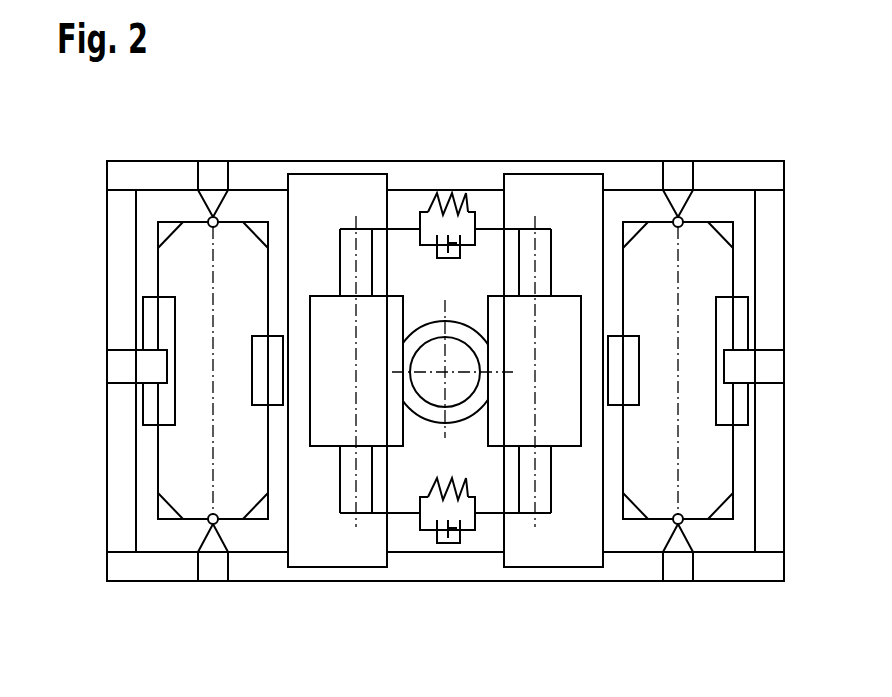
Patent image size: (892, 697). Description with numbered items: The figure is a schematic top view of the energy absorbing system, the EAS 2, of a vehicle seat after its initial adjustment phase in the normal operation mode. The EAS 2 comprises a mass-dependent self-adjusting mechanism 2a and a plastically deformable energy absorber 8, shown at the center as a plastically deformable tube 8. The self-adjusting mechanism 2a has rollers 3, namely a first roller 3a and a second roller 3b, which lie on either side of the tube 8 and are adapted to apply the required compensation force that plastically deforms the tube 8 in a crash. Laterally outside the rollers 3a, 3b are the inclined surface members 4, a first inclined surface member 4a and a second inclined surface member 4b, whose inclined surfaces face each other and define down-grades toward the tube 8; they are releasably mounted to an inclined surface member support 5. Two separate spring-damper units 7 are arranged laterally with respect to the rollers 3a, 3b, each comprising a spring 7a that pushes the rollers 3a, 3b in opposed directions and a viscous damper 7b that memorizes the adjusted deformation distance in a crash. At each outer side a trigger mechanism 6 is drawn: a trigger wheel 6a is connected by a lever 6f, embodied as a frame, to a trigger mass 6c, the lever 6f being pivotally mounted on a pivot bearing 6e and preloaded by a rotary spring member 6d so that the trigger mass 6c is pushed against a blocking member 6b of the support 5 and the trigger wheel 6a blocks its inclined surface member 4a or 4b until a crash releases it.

The EAS 2 is at (543, 149).
The mass-dependent self-adjusting mechanism 2a is at (398, 208).
The rollers 3 is at (446, 314).
The first roller 3a is at (328, 320).
The second roller 3b is at (563, 320).
The inclined surface members 4 is at (337, 383).
The first inclined surface member 4a is at (325, 548).
The second inclined surface member 4b is at (560, 545).
The inclined surface member support 5 is at (558, 419).
The trigger mechanism 6 is at (445, 383).
The trigger wheel 6a is at (265, 387).
The blocking member 6b is at (123, 362).
The trigger mass 6c is at (152, 408).
The spring member 6d is at (213, 270).
The pivot bearing 6e is at (209, 220).
The lever 6f is at (195, 521).
The spring-damper unit 7 is at (460, 383).
The spring 7a is at (460, 205).
The damper 7b is at (456, 240).
The plastically deformable energy absorber 8 is at (425, 408).